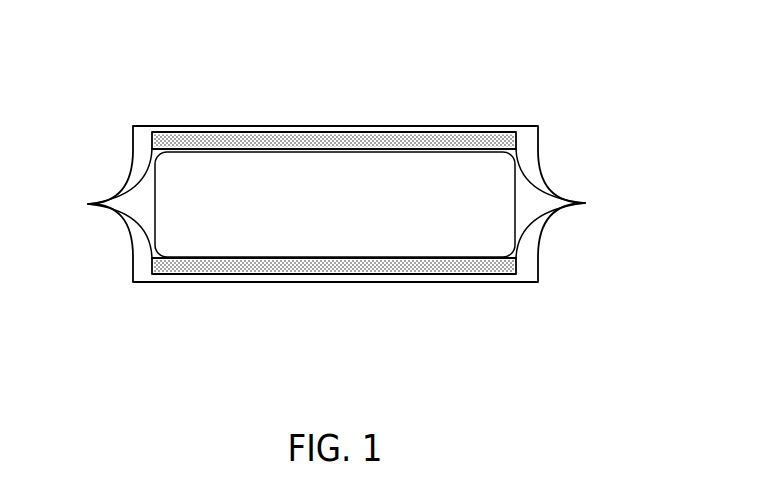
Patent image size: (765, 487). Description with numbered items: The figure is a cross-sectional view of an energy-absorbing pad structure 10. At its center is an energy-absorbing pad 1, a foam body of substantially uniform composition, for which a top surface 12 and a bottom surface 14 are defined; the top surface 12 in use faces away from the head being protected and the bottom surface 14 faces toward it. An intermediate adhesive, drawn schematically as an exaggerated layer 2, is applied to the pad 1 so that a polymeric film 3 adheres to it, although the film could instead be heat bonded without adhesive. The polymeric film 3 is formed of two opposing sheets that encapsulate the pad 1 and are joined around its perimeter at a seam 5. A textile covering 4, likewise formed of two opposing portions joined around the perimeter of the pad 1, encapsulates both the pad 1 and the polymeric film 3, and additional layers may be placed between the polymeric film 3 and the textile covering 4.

The energy-absorbing pad 1 is at (333, 167).
The adhesive layer 2 is at (281, 132).
The polymeric film 3 is at (218, 132).
The textile covering 4 is at (153, 125).
The seam 5 is at (86, 203).
The energy-absorbing pad structure 10 is at (419, 88).
The top surface 12 is at (391, 148).
The bottom surface 14 is at (385, 258).